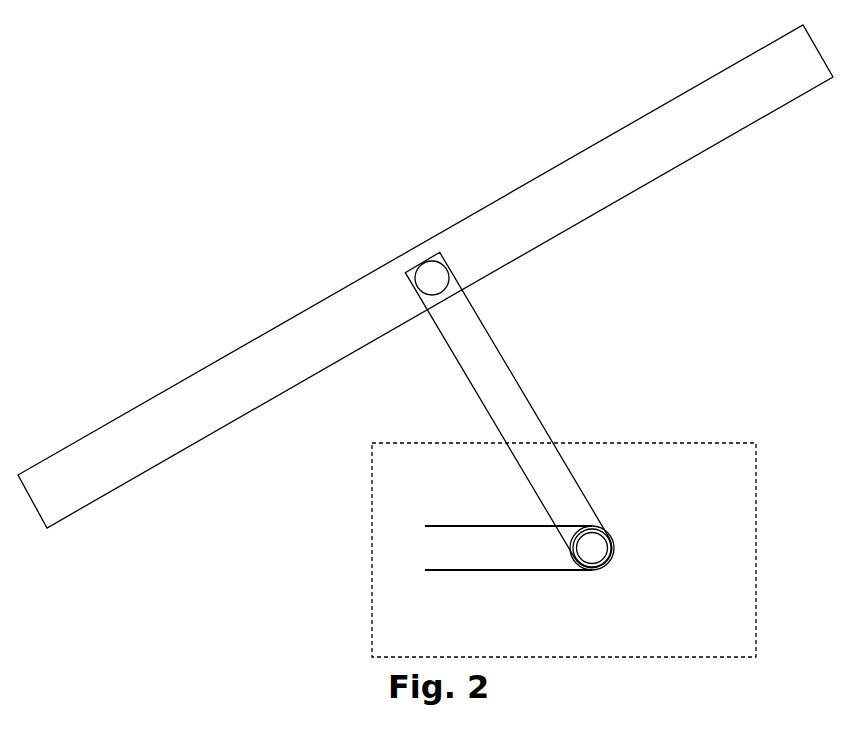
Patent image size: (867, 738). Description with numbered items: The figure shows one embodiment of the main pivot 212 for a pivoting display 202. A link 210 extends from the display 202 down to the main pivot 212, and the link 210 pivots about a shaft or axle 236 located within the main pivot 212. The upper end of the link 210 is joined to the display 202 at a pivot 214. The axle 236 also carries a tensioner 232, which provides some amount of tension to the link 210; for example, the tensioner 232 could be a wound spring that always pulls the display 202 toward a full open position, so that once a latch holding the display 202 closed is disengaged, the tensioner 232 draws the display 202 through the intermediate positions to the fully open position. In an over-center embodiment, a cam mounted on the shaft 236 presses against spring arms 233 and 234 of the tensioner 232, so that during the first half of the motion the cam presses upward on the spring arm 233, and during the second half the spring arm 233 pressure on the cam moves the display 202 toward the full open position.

The display 202 is at (200, 371).
The link 210 is at (492, 347).
The pivot joint 214 is at (430, 277).
The main pivot 212 is at (757, 453).
The spring arm 233 is at (503, 521).
The spring arm 234 is at (472, 573).
The axle 236 is at (612, 530).
The tensioner 232 is at (605, 570).